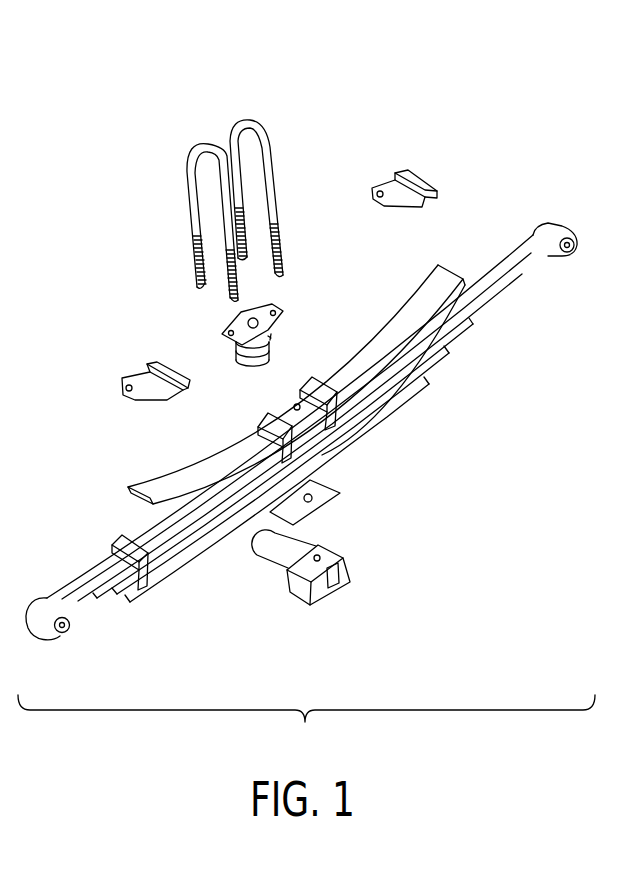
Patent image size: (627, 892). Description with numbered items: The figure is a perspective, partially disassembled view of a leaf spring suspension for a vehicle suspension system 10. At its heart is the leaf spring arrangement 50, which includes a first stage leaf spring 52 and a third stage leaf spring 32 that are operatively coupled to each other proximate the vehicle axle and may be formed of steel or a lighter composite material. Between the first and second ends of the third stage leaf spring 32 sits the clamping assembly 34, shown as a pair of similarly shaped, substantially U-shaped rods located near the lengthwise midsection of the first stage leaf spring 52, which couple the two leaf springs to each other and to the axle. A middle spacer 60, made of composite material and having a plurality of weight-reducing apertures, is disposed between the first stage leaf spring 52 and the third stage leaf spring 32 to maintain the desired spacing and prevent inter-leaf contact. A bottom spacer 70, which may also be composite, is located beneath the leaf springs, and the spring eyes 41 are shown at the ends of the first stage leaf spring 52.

The vehicle suspension system 10 is at (528, 142).
The clamping assembly 34 is at (230, 143).
The spring eyes with bushings 41 is at (550, 230).
The first stage leaf spring 52 is at (487, 290).
The third stage leaf spring 32 is at (162, 488).
The leaf spring arrangement 50 is at (202, 548).
The middle spacer 60 is at (325, 432).
The bottom spacer 70 is at (350, 572).